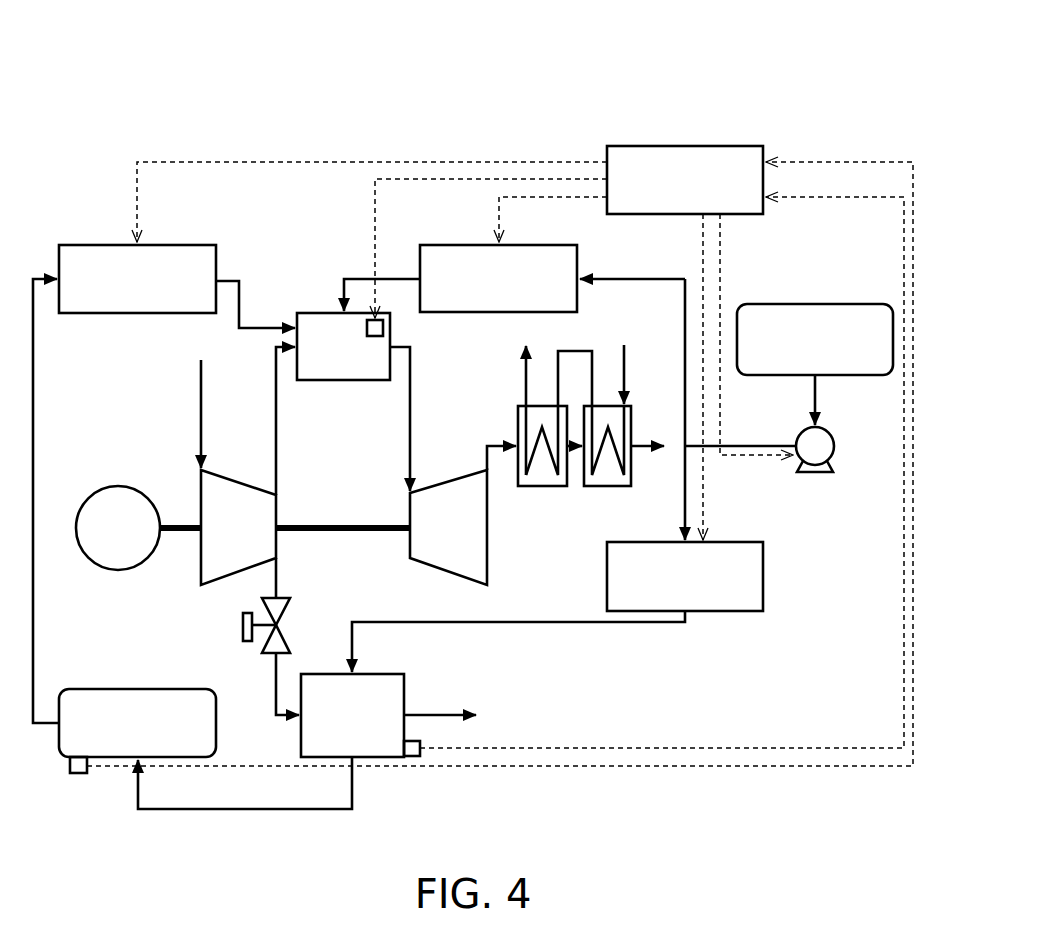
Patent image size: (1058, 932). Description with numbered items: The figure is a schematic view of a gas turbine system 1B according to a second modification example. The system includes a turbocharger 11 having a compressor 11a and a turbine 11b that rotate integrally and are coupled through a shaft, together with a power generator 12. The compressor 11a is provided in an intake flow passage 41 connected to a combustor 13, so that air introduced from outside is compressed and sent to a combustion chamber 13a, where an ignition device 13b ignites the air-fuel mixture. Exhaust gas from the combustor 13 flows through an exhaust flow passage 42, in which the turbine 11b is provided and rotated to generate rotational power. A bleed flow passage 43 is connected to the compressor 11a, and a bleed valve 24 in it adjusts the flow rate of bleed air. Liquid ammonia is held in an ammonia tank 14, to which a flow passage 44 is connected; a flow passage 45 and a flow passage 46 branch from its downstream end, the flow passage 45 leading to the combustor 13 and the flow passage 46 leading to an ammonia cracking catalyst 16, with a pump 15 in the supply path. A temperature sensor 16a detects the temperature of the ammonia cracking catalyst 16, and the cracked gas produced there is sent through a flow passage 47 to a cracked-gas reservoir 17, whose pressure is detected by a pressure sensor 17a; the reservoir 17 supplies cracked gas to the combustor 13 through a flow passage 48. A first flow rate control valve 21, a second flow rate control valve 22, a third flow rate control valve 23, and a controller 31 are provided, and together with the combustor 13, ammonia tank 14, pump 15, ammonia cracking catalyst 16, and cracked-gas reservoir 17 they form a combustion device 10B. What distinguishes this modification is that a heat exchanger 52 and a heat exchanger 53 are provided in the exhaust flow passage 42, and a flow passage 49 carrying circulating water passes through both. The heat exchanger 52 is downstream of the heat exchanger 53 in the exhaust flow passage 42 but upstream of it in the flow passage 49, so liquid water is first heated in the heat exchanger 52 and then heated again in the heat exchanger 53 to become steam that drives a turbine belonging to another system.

The gas turbine system 1B is at (74, 72).
The combustion device 10B is at (102, 150).
The turbocharger 11 is at (323, 527).
The compressor 11a is at (277, 503).
The turbine 11b is at (407, 544).
The power generator 12 is at (120, 485).
The combustor 13 is at (379, 372).
The combustion chamber 13a is at (312, 370).
The ignition device 13b is at (383, 327).
The ammonia tank 14 is at (816, 303).
The pump 15 is at (835, 445).
The ammonia cracking catalyst 16 is at (368, 719).
The temperature sensor 16a is at (410, 758).
The cracked-gas reservoir 17 is at (136, 733).
The pressure sensor 17a is at (78, 775).
The first flow rate control valve 21 is at (742, 541).
The second flow rate control valve 22 is at (174, 244).
The third flow rate control valve 23 is at (542, 244).
The bleed valve 24 is at (243, 627).
The controller 31 is at (687, 145).
The intake flow passage 41 is at (201, 386).
The exhaust flow passage 42 is at (412, 440).
The bleed flow passage 43 is at (276, 594).
The flow passage 44 is at (746, 443).
The flow passage 45 is at (393, 277).
The flow passage 46 is at (684, 500).
The flow passage 47 is at (244, 811).
The flow passage 48 is at (230, 277).
The flow passage 49 is at (522, 367).
The heat exchanger 52 is at (604, 487).
The heat exchanger 53 is at (541, 487).